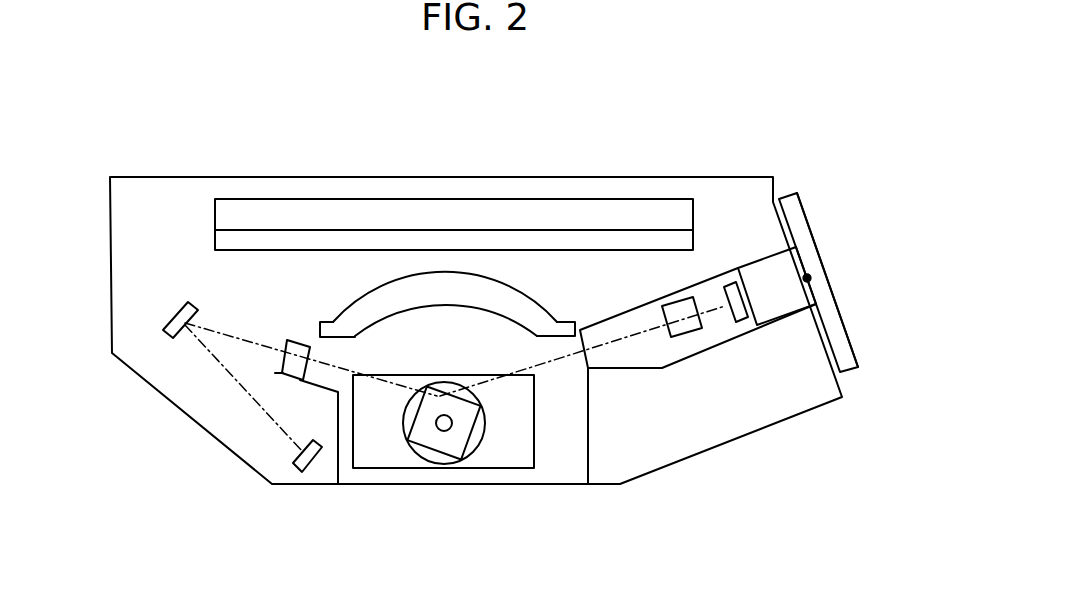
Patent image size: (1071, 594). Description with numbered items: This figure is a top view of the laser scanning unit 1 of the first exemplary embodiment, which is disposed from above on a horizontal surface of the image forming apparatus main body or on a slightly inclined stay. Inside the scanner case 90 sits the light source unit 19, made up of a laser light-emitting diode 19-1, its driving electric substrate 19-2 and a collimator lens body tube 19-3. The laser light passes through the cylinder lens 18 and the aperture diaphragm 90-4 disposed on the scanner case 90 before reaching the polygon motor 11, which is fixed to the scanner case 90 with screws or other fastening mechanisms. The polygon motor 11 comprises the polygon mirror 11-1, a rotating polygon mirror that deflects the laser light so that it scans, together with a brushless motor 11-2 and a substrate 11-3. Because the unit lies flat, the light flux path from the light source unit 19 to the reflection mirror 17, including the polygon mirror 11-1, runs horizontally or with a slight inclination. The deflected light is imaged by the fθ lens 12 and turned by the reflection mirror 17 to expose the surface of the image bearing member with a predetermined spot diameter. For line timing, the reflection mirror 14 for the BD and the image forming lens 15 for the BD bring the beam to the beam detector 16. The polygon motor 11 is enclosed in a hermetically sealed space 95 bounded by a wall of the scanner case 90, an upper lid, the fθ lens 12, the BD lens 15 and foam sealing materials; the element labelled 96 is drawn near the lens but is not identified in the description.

The laser scanning unit 1 is at (188, 128).
The polygon motor 11 is at (472, 458).
The polygon mirror 11-1 is at (440, 442).
The brushless motor 11-2 is at (415, 448).
The substrate 11-3 is at (508, 443).
The fθ lens 12 is at (465, 288).
The reflection mirror for the BD 14 is at (175, 320).
The image forming lens for the BD 15 is at (282, 365).
The beam detector 16 is at (293, 458).
The reflection mirror 17 is at (630, 218).
The cylinder lens 18 is at (692, 333).
The light source unit 19 is at (800, 225).
The laser light-emitting diode 19-1 is at (810, 270).
The driving electric substrate 19-2 is at (832, 318).
The collimator lens body tube 19-3 is at (733, 283).
The scanner case 90 is at (613, 485).
The aperture diaphragm 90-4 is at (588, 330).
The hermetically sealed space 95 is at (568, 445).
The lens holder 96 is at (396, 322).